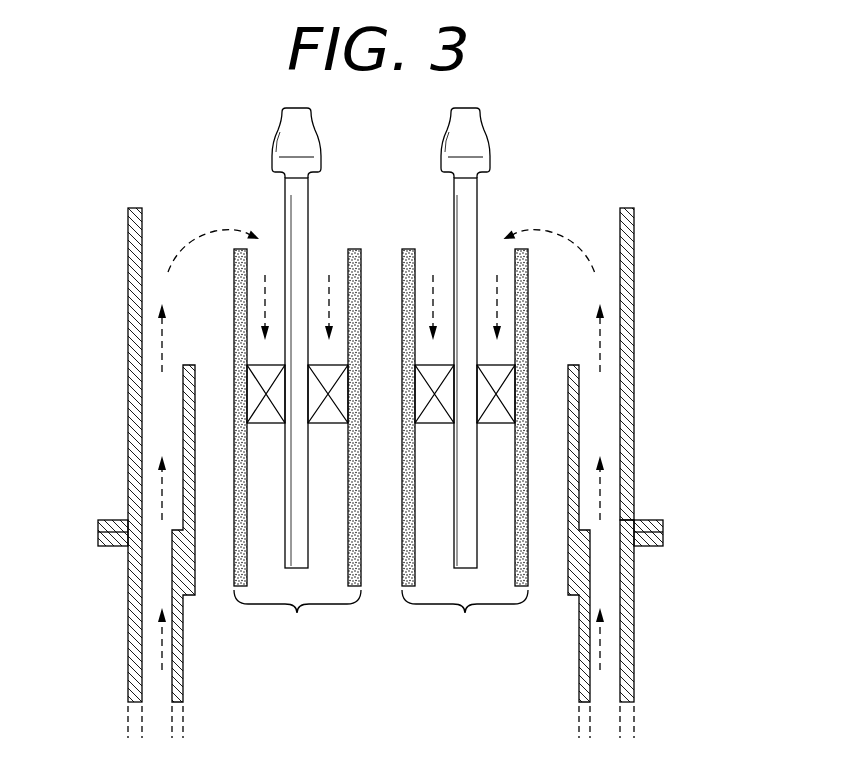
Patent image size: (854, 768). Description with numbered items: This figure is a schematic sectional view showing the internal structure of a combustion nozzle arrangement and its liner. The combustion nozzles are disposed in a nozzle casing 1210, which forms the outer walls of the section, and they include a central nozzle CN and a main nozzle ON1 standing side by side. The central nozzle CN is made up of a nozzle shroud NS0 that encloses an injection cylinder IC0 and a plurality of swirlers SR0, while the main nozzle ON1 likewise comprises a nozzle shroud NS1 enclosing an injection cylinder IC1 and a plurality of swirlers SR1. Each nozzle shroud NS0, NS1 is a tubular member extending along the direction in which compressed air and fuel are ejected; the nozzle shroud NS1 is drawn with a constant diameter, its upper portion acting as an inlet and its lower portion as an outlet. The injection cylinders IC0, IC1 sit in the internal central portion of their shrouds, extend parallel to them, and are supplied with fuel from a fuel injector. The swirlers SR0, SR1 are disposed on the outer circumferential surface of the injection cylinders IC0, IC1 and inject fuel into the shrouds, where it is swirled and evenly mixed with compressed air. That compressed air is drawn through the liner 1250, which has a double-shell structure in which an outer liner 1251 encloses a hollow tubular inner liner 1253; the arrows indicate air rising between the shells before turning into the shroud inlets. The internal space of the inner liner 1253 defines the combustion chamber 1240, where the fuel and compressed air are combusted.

The injection cylinder IC0 is at (295, 187).
The injection cylinder IC1 is at (468, 187).
The nozzle shroud NS0 is at (240, 330).
The nozzle shroud NS1 is at (524, 332).
The swirlers SR0 is at (250, 397).
The swirlers SR1 is at (508, 397).
The central nozzle CN is at (297, 615).
The main nozzle ON1 is at (465, 615).
The nozzle casing 1210 is at (634, 286).
The liner 1250 is at (681, 551).
The outer liner 1251 is at (634, 570).
The inner liner 1253 is at (588, 590).
The combustion chamber 1240 is at (370, 652).